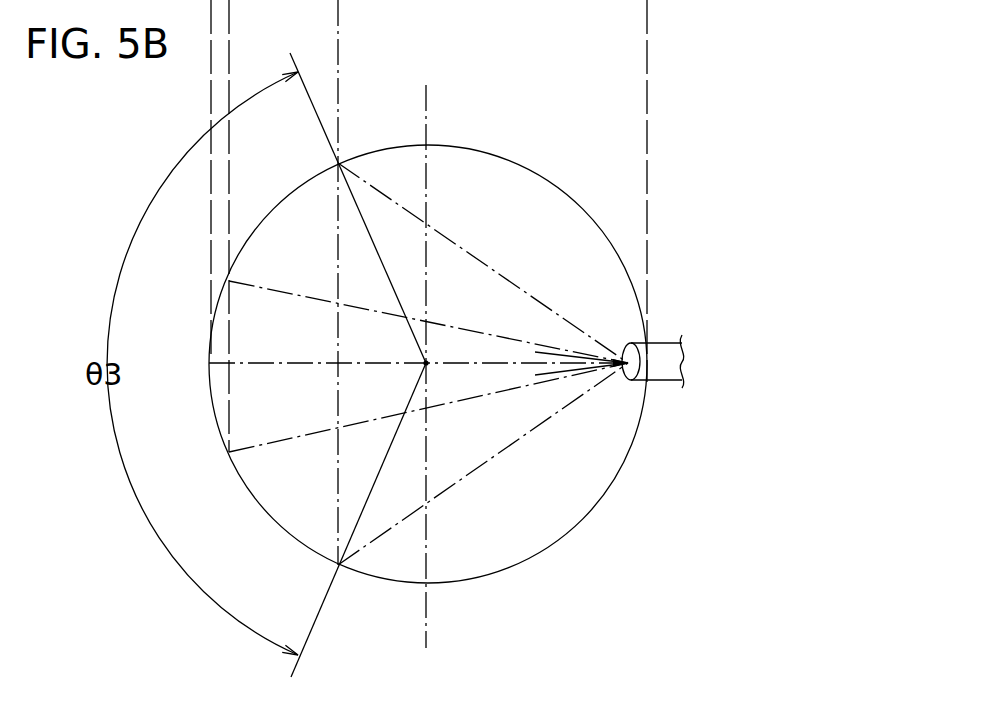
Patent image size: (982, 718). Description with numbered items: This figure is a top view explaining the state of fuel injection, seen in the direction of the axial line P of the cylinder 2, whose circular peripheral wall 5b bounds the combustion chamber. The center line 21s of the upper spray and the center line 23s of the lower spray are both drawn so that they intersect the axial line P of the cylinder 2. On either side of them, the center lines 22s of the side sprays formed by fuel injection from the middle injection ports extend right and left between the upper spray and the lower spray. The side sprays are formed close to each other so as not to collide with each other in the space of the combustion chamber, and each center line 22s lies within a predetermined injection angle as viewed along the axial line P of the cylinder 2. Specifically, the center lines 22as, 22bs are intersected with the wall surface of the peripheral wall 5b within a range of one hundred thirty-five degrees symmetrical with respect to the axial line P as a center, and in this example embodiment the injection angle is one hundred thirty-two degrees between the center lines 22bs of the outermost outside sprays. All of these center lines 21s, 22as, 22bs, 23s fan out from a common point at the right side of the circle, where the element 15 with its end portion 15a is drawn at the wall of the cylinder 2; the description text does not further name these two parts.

The peripheral wall 5b is at (518, 165).
The center lines of side sprays 22s is at (428, 364).
The center line of inner side spray 22as is at (303, 295).
The center line of outermost outside spray 22bs is at (452, 233).
The center line of upper spray 21s is at (280, 365).
The center line of lower spray 23s is at (497, 365).
The light guide 15 is at (667, 369).
The light incident end face 15a is at (623, 382).
The cylinder 2 is at (602, 553).
The axial line of the cylinder P is at (426, 363).